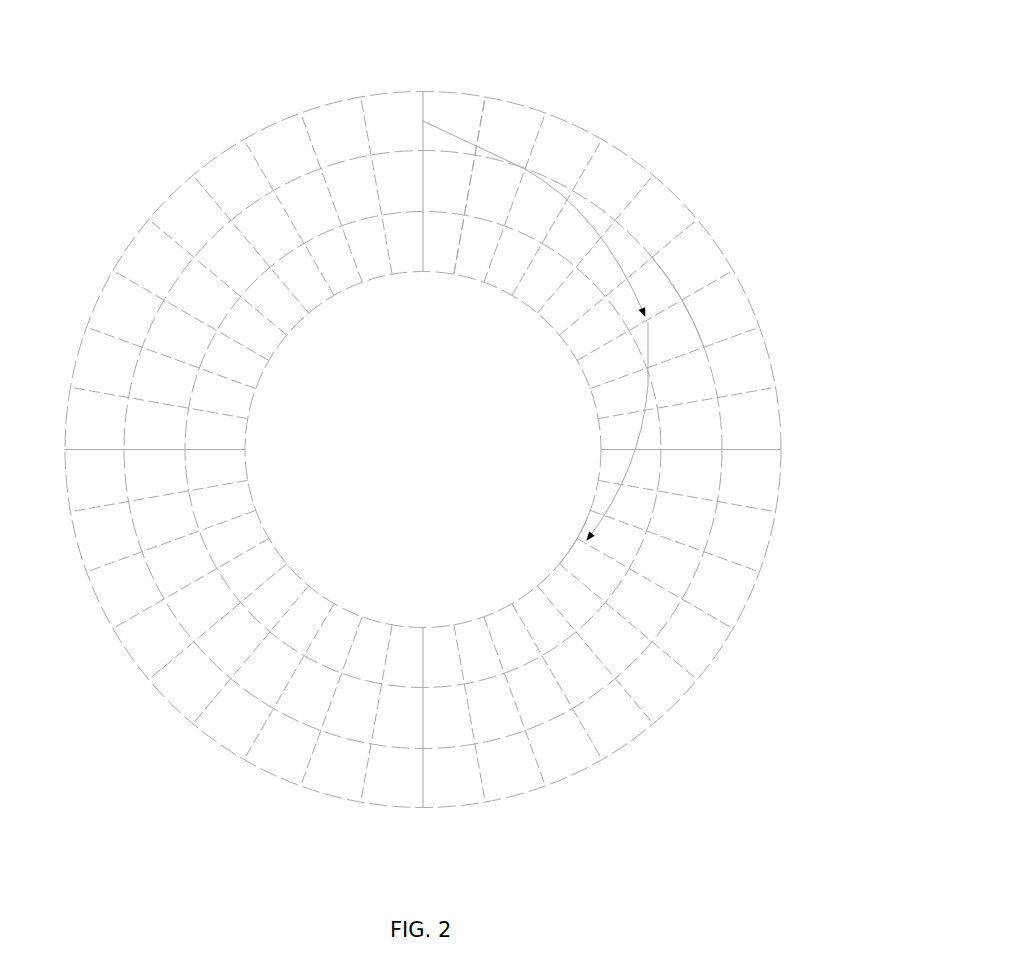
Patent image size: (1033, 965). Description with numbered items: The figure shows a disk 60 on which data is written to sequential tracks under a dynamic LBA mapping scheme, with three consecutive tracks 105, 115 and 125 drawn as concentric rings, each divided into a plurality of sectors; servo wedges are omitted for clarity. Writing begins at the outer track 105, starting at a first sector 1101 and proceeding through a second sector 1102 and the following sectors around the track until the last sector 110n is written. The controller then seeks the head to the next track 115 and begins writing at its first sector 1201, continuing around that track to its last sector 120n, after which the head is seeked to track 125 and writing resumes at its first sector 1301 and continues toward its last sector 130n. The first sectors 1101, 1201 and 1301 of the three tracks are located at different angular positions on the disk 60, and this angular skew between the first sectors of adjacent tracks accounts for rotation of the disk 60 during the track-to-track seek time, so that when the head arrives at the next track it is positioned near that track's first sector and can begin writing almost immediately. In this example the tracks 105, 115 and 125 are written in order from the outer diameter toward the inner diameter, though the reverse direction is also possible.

The disk 60 is at (770, 54).
The track 105 is at (765, 348).
The track 115 is at (703, 560).
The track 125 is at (440, 626).
The last sector 110n is at (379, 89).
The first sector 1101 is at (453, 88).
The second sector 1102 is at (518, 98).
The last sector 120n is at (669, 271).
The first sector 1201 is at (695, 320).
The last sector 130n is at (581, 517).
The first sector 1301 is at (573, 549).